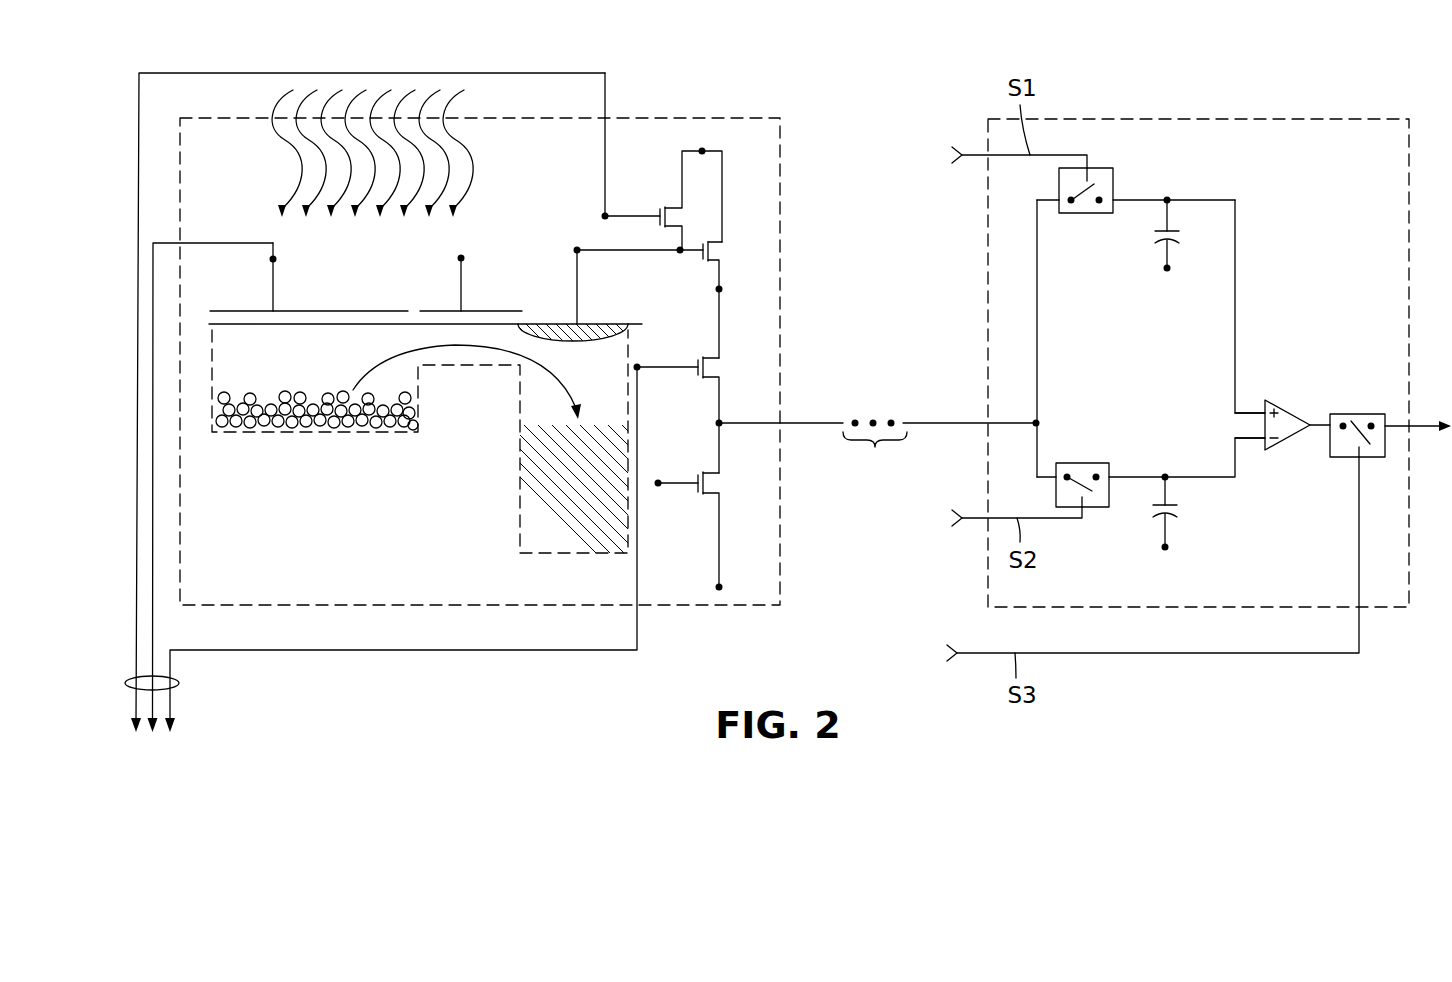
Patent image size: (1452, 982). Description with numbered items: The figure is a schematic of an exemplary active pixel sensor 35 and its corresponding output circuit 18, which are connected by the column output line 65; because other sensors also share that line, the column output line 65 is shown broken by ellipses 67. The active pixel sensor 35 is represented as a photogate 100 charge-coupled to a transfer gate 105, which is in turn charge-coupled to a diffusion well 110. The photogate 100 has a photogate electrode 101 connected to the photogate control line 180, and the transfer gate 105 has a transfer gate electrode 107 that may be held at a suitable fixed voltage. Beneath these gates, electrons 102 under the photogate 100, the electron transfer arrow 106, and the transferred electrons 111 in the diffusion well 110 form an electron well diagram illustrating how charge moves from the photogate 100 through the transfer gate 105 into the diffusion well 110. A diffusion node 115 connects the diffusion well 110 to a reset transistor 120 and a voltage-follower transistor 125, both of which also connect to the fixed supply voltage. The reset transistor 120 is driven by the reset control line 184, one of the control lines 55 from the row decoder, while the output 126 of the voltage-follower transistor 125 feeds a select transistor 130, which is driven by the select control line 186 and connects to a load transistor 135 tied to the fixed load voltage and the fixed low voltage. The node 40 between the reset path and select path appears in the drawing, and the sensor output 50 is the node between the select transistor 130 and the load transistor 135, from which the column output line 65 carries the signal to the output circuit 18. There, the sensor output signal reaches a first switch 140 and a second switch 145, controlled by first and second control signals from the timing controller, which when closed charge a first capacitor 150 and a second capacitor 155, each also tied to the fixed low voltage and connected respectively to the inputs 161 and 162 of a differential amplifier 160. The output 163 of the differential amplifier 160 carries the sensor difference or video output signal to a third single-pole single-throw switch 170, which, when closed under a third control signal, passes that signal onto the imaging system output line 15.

The imaging system output line 15 is at (1430, 429).
The output circuit 18 is at (1150, 119).
The active pixel sensor 35 is at (646, 118).
The reset node 40 is at (634, 366).
The sensor output 50 is at (722, 425).
The control lines 55 is at (181, 683).
The column output line 65 is at (943, 423).
The ellipses 67 is at (875, 446).
The photogate 100 is at (320, 303).
The photogate electrode 101 is at (276, 258).
The electrons 102 is at (342, 446).
The transfer gate 105 is at (493, 292).
The electron transfer arrow 106 is at (378, 362).
The transfer gate electrode 107 is at (456, 257).
The diffusion well 110 is at (597, 324).
The transferred electrons 111 is at (535, 426).
The diffusion node 115 is at (575, 254).
The reset transistor 120 is at (658, 210).
The voltage-follower transistor 125 is at (702, 259).
The output of the voltage-follower transistor 126 is at (722, 291).
The select transistor 130 is at (698, 380).
The load transistor 135 is at (698, 494).
The first switch 140 is at (1113, 173).
The second switch 145 is at (1086, 463).
The first capacitor 150 is at (1165, 258).
The second capacitor 155 is at (1170, 530).
The differential amplifier 160 is at (1272, 449).
The input of the differential amplifier 161 is at (1268, 405).
The input of the differential amplifier 162 is at (1262, 438).
The output of the differential amplifier 163 is at (1313, 430).
The third single-pole single-throw switch 170 is at (1355, 414).
The photogate control line 180 is at (222, 244).
The reset control line 184 is at (443, 72).
The select control line 186 is at (483, 651).